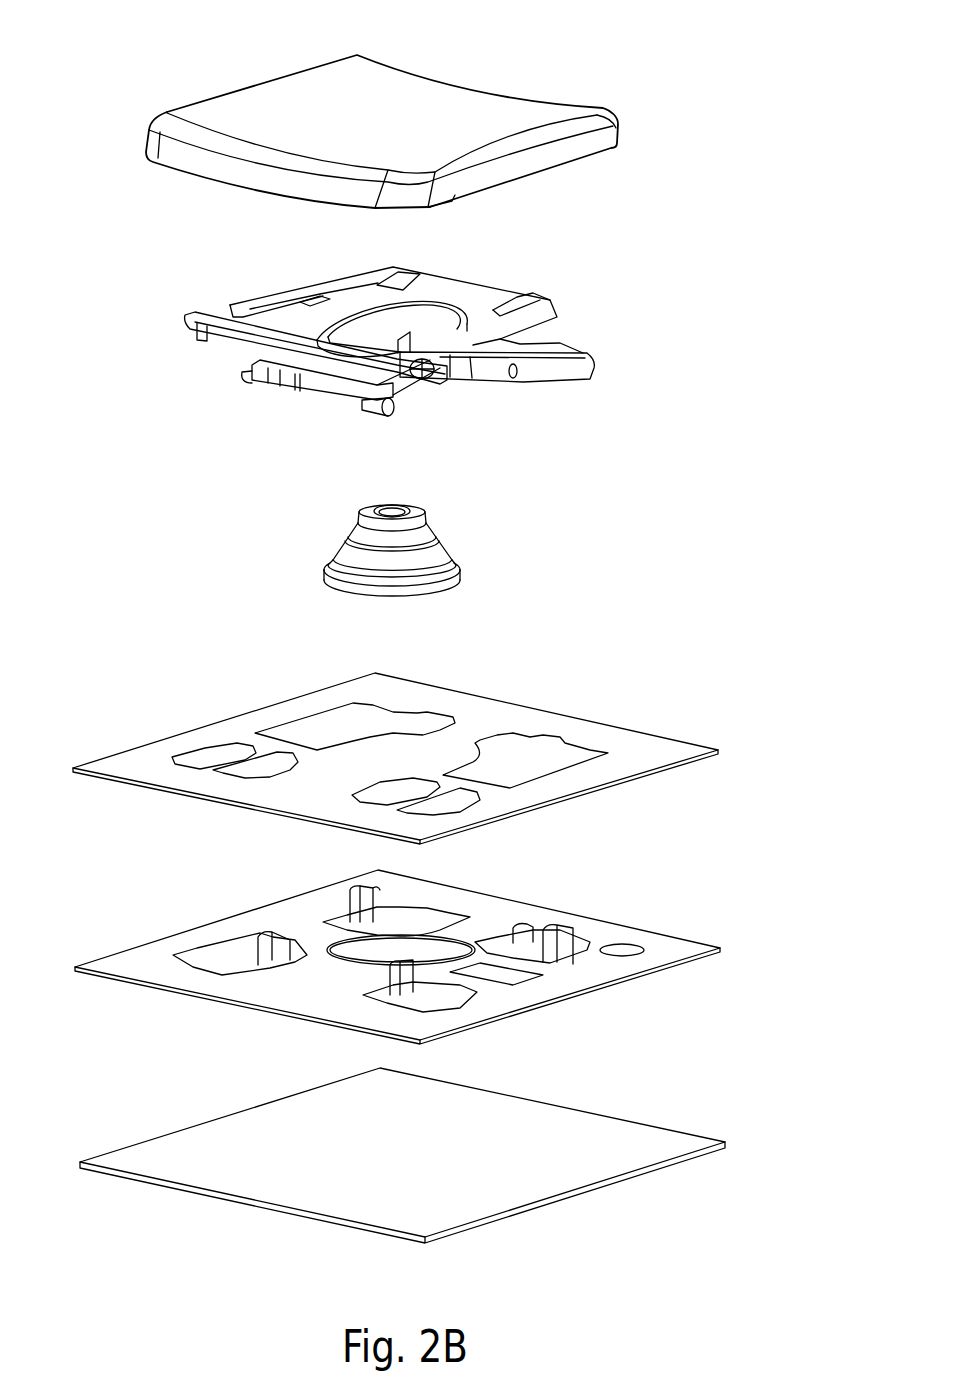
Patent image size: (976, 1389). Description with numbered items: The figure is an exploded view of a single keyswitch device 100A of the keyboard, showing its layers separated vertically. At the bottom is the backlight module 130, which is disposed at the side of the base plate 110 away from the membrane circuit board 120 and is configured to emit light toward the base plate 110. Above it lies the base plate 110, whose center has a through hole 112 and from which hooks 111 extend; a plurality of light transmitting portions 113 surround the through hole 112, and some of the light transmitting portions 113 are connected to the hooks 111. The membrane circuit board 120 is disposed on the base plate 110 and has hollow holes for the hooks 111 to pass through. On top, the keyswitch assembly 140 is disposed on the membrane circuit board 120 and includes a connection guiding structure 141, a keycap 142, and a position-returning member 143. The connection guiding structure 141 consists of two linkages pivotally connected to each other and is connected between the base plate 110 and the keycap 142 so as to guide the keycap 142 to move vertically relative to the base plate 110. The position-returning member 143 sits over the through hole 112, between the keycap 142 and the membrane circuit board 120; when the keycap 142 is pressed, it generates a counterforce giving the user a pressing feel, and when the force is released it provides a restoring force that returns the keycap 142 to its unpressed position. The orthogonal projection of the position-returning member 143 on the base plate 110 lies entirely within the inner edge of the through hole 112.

The keyswitch device 100A is at (85, 32).
The base plate 110 is at (673, 946).
The hooks 111 is at (562, 928).
The through hole 112 is at (343, 957).
The light transmitting portions 113 is at (195, 952).
The membrane circuit board 120 is at (658, 738).
The backlight module 130 is at (670, 1138).
The keyswitch assembly 140 is at (690, 198).
The connection guiding structure 141 is at (590, 368).
The keycap 142 is at (590, 147).
The position-returning member 143 is at (437, 545).